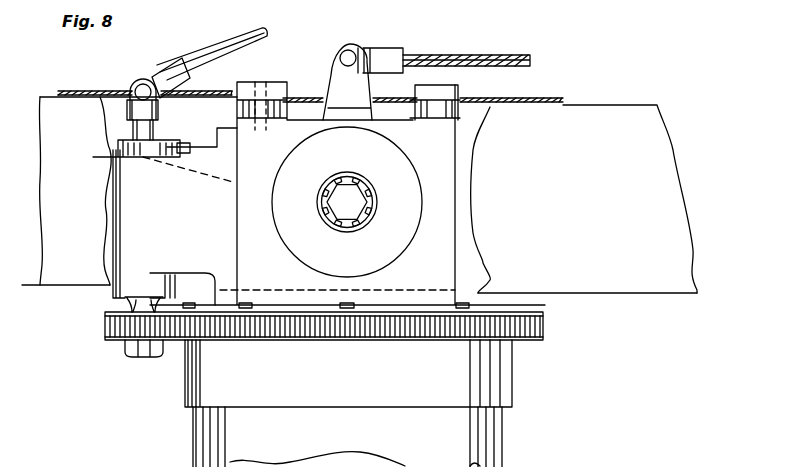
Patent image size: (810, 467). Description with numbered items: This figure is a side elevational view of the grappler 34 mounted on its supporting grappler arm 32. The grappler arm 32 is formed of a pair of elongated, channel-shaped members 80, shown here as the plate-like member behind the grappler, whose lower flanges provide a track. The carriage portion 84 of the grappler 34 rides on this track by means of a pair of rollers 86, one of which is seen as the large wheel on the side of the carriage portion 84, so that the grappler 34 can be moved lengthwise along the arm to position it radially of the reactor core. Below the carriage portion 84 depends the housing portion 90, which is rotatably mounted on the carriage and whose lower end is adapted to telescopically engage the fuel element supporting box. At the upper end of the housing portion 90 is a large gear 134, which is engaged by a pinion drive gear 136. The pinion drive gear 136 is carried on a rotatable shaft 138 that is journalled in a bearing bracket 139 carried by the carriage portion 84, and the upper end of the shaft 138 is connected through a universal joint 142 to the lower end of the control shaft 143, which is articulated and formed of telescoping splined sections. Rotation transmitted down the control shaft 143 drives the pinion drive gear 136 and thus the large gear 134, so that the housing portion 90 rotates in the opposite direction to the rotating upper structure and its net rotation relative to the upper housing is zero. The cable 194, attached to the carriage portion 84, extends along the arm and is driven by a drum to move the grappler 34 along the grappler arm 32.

The grappler arm 32 is at (661, 290).
The grappler 34 is at (503, 437).
The channel-shaped member 80 is at (641, 105).
The carriage portion 84 is at (460, 183).
The rollers 86 is at (400, 245).
The housing portion 90 is at (513, 392).
The large gear 134 is at (543, 336).
The pinion drive gear 136 is at (105, 325).
The rotatable shaft 138 is at (145, 155).
The bearing bracket 139 is at (125, 187).
The universal joint 142 is at (135, 80).
The control shaft 143 is at (220, 52).
The cable 194 is at (531, 44).